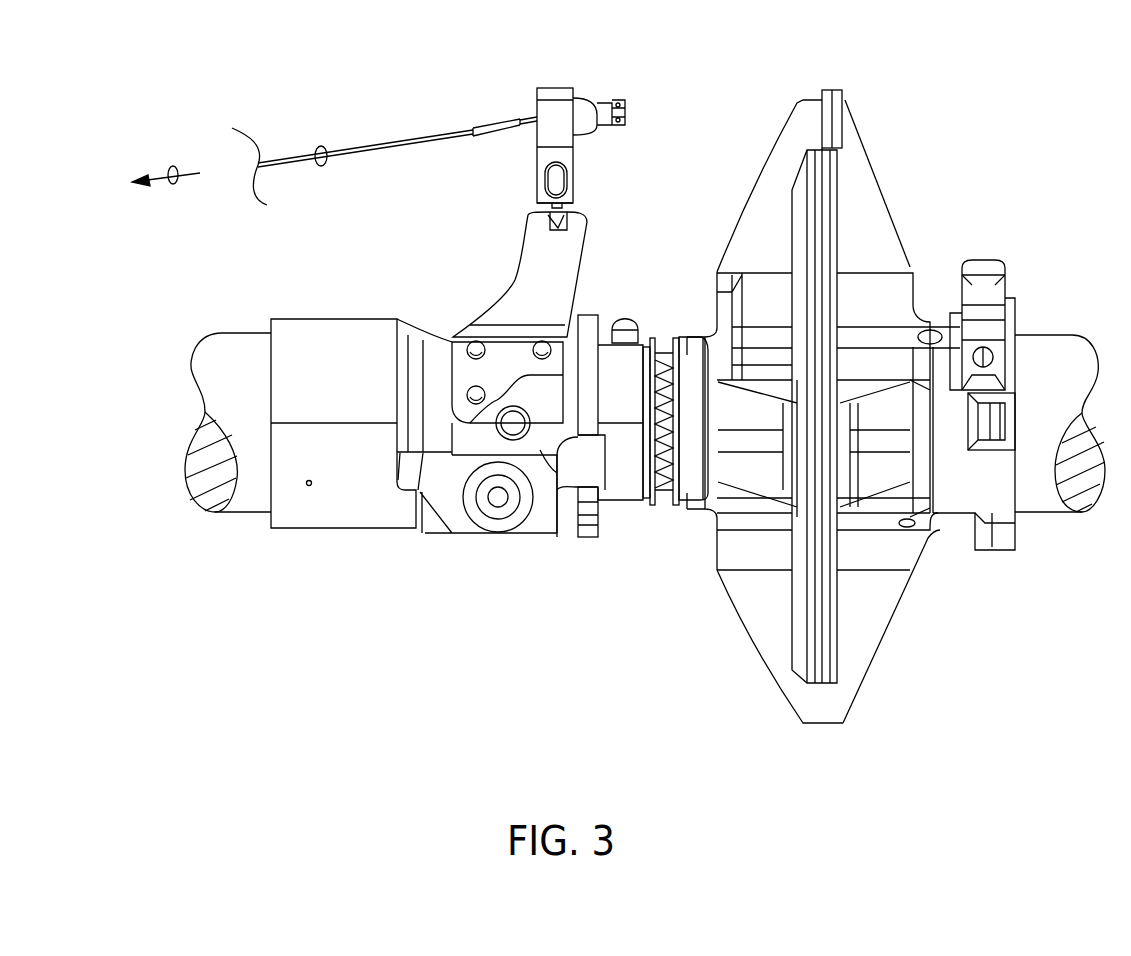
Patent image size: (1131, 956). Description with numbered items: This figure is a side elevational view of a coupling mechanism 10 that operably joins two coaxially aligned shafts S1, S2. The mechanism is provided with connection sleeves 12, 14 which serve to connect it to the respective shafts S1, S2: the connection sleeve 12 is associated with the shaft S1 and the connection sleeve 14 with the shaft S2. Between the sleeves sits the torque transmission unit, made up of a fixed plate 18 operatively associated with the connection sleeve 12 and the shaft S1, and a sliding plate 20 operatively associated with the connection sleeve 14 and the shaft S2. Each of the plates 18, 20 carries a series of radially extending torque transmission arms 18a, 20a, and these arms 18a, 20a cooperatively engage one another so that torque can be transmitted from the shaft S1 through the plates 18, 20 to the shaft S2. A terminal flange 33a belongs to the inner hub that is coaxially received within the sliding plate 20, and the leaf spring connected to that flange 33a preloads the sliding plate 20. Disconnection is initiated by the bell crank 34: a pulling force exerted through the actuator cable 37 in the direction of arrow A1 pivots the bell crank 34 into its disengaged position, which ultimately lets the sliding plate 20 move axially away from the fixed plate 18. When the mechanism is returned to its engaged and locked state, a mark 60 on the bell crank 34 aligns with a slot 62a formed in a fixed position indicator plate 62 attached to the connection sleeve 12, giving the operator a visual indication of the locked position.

The coupling mechanism 10 is at (525, 608).
The connection sleeve 12 is at (981, 497).
The connection sleeve 14 is at (355, 401).
The fixed plate 18 is at (896, 310).
The torque transmission arms 18a is at (877, 218).
The sliding plate 20 is at (786, 310).
The torque transmission arms 20a is at (777, 177).
The terminal flange 33a is at (810, 337).
The bell crank 34 is at (556, 112).
The actuator cable 37 is at (325, 150).
The mark 60 is at (560, 212).
The indicator plate 62 is at (560, 294).
The bracket notch 62a is at (547, 215).
The arrow A1 is at (178, 185).
The shaft S1 is at (1066, 406).
The shaft S2 is at (253, 390).